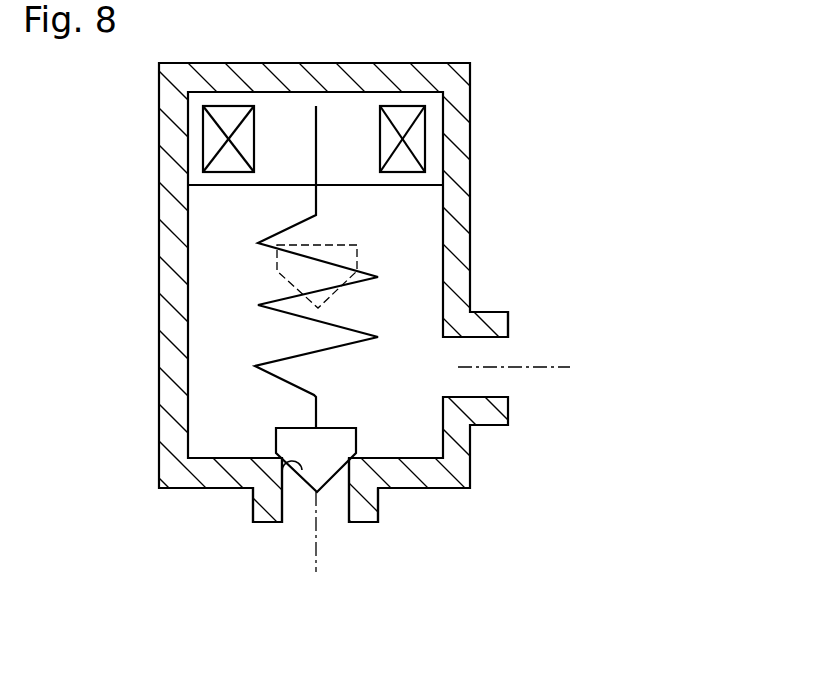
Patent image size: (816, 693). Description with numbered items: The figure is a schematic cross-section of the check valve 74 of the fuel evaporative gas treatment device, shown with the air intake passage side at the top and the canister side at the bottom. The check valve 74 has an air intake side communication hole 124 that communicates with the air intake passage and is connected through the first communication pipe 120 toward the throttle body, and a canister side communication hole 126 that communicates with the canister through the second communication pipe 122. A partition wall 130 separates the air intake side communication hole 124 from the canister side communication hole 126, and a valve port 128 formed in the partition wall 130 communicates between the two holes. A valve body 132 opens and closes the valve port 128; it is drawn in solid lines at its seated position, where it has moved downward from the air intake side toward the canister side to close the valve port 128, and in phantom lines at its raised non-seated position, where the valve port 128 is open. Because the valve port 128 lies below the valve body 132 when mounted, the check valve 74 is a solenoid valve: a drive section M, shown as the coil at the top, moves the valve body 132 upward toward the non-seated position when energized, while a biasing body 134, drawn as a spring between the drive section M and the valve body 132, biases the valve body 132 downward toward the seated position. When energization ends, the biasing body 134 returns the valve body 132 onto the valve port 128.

The check valve 74 is at (453, 198).
The drive section M is at (215, 137).
The biasing body 134 is at (275, 312).
The valve body 132 is at (338, 443).
The air intake side communication hole 124 is at (463, 353).
The first communication pipe 120 is at (517, 365).
The canister side communication hole 126 is at (340, 506).
The valve port 128 is at (283, 475).
The partition wall 130 is at (213, 467).
The second communication pipe 122 is at (317, 543).